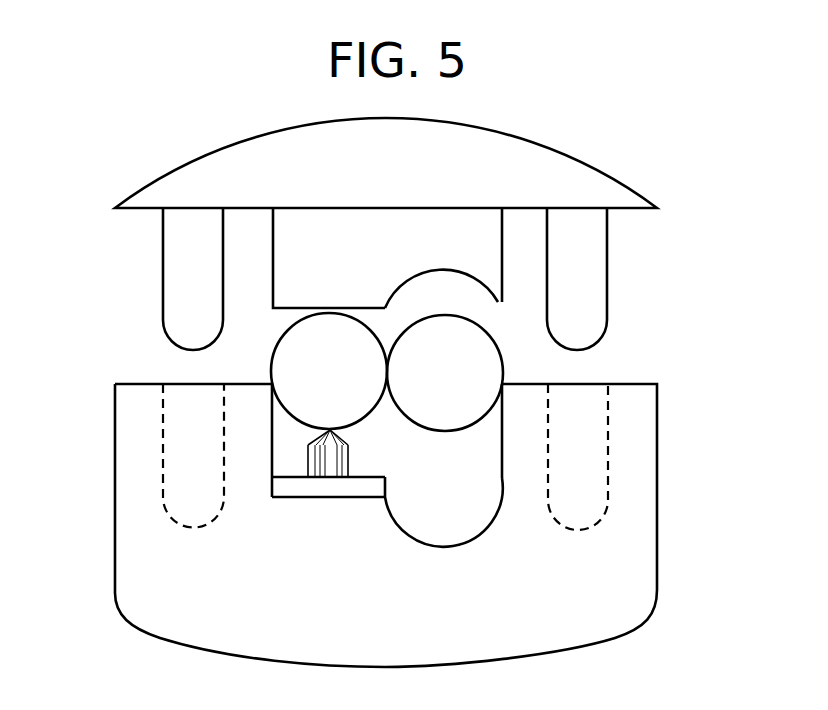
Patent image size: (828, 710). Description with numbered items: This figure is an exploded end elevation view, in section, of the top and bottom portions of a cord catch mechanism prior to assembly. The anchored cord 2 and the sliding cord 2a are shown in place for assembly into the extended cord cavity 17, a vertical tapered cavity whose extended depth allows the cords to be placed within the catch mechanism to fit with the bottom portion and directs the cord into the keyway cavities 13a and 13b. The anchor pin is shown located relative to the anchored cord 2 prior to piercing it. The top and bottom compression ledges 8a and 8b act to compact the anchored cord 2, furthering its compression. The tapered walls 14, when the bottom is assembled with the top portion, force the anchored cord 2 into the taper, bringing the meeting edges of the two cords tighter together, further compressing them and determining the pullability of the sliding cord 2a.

The anchored cord 2 is at (337, 384).
The sliding cord 2a is at (461, 384).
The compression ledge 8a is at (295, 490).
The compression ledge 8b is at (322, 307).
The keyway cavity 13a is at (578, 455).
The keyway cavity 13b is at (193, 456).
The tapered walls 14 is at (500, 503).
The extended cord cavity 17 is at (503, 432).